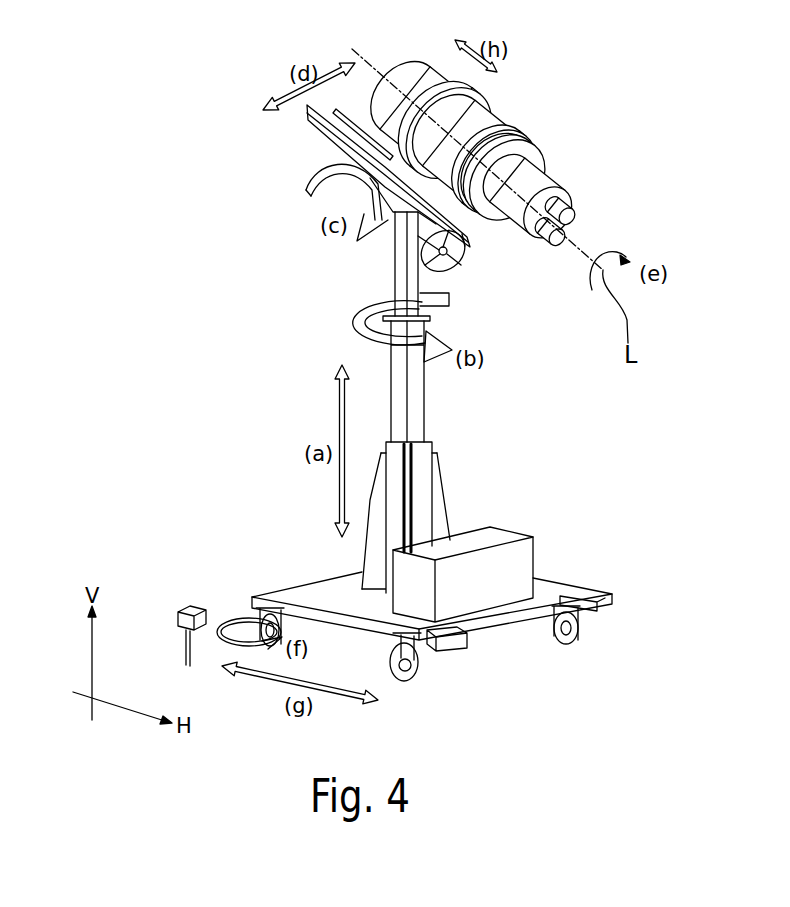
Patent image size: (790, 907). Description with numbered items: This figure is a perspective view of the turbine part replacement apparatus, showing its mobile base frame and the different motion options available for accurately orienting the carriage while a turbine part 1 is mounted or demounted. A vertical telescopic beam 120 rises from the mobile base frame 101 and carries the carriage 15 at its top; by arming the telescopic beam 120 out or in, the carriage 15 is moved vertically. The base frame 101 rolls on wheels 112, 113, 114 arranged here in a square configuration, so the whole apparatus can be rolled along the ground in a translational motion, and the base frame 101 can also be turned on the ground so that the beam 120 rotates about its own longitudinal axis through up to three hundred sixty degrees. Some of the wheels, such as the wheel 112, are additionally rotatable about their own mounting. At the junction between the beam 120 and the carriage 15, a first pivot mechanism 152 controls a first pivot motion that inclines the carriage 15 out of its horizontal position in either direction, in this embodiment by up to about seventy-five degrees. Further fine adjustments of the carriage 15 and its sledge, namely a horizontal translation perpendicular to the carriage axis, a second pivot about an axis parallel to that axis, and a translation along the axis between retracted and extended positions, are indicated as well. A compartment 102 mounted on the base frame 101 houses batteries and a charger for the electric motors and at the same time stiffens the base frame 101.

The turbine part 1 is at (502, 118).
The carriage 15 is at (306, 118).
The first pivot mechanism 152 is at (466, 266).
The telescopic beam 120 is at (428, 388).
The mobile base frame 101 is at (265, 593).
The compartment 102 is at (508, 530).
The wheel 112 is at (266, 646).
The wheel 113 is at (577, 640).
The wheel 114 is at (421, 673).